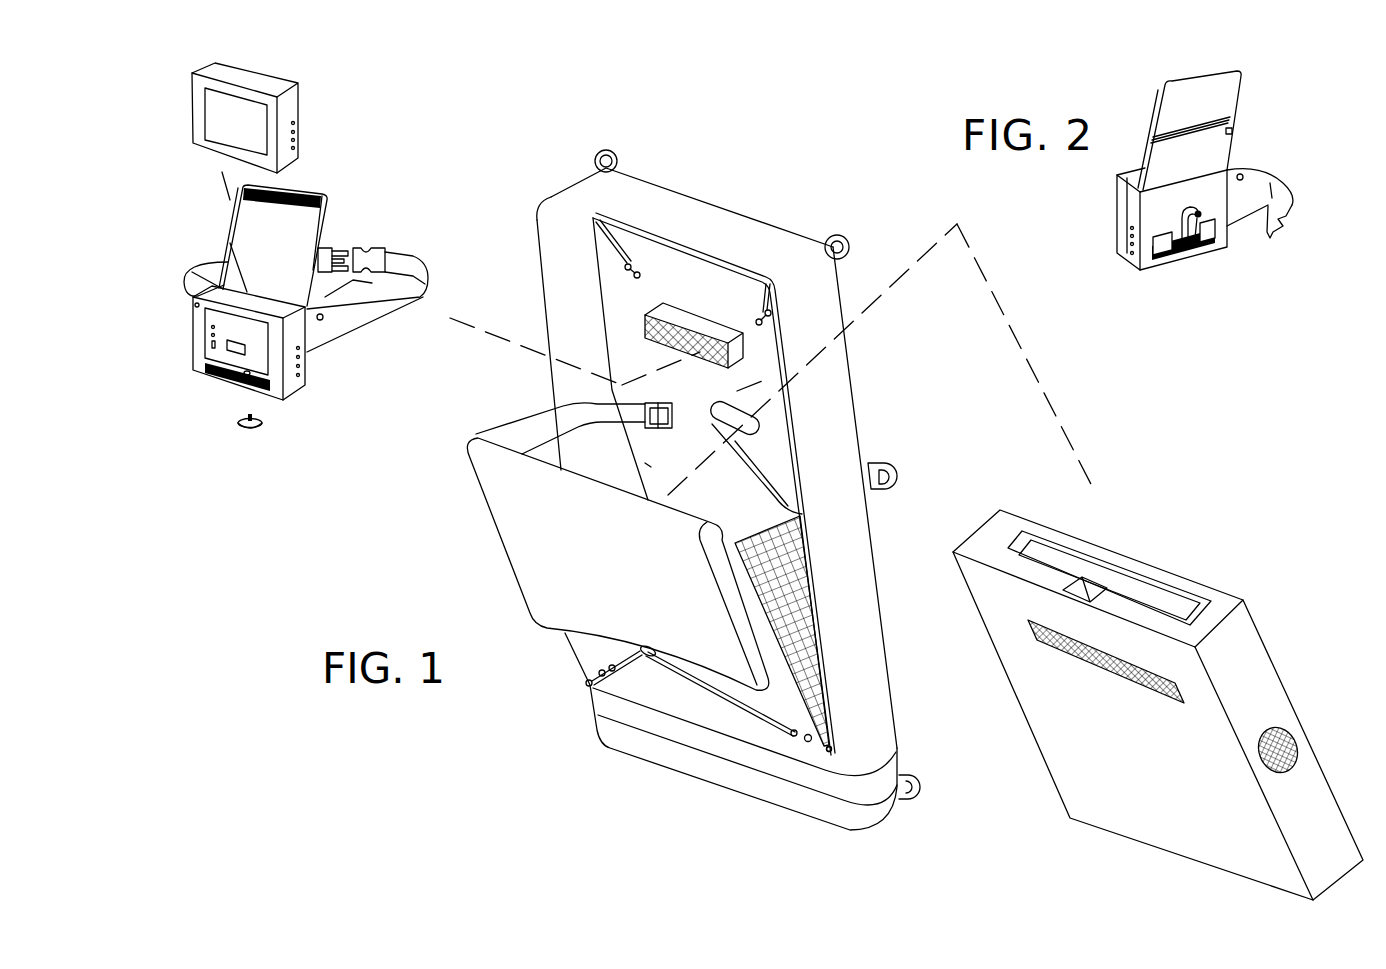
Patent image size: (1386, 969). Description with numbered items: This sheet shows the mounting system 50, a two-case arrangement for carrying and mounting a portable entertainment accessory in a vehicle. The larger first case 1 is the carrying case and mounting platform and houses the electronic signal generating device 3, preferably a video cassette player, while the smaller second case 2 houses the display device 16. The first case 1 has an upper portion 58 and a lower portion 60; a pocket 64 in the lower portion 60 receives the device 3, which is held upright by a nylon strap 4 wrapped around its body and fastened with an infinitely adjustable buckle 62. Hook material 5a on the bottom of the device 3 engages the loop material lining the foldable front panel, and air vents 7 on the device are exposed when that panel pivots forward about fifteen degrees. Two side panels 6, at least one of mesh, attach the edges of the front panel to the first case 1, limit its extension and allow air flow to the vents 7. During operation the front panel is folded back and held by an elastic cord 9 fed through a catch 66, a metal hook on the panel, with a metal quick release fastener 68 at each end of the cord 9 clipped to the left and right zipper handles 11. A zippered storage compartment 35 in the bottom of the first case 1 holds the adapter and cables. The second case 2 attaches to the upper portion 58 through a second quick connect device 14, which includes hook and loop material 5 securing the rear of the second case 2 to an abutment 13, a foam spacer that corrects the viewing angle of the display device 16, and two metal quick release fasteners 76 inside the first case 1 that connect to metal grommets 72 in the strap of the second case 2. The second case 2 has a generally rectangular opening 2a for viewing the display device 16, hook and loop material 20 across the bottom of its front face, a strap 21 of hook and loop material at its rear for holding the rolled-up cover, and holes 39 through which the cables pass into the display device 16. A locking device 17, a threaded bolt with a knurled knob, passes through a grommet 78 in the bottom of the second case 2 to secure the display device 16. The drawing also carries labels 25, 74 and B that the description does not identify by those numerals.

In FIG. 1, the first case 1 is at (718, 205).
In FIG. 1, the second case 2 is at (288, 397).
In FIG. 2, the second case 2 is at (1270, 110).
In FIG. 1, the opening 2a is at (203, 335).
In FIG. 1, the electronic signal generating device 3 is at (1158, 818).
In FIG. 1, the strap 4 is at (551, 404).
In FIG. 1, the hook and loop material 5 is at (692, 318).
In FIG. 2, the hook and loop material 5 is at (1210, 247).
In FIG. 1, the hook material 5a is at (1038, 638).
In FIG. 1, the side panels 6 is at (811, 573).
In FIG. 1, the air vents 7 is at (1293, 733).
In FIG. 1, the elastic cord 9 is at (712, 717).
In FIG. 1, the front panel zipper handles 11 is at (828, 752).
In FIG. 1, the abutment 13 is at (568, 326).
In FIG. 1, the second quick connect device 14 is at (632, 262).
In FIG. 1, the display device 16 is at (298, 117).
In FIG. 1, the locking device 17 is at (263, 427).
In FIG. 1, the hook and loop material 20 is at (218, 375).
In FIG. 2, the strap 21 is at (1193, 220).
In FIG. 1, the belt 25 is at (417, 260).
In FIG. 2, the belt 25 is at (1270, 240).
In FIG. 1, the storage compartment 35 is at (883, 800).
In FIG. 1, the holes 39 is at (300, 371).
In FIG. 2, the holes 39 is at (1132, 253).
In FIG. 1, the mounting system 50 is at (622, 118).
In FIG. 1, the upper portion 58 is at (601, 335).
In FIG. 1, the lower portion 60 is at (648, 465).
In FIG. 1, the buckle 62 is at (673, 408).
In FIG. 1, the pocket 64 is at (716, 490).
In FIG. 1, the catch 66 is at (640, 647).
In FIG. 1, the metal quick release fastener 68 is at (589, 686).
In FIG. 1, the grommets 72 is at (323, 320).
In FIG. 2, the grommets 72 is at (1283, 180).
In FIG. 1, the belt buckle 74 is at (358, 250).
In FIG. 1, the metal quick release fasteners 76 is at (637, 272).
In FIG. 1, the grommet 78 is at (235, 385).
In FIG. 1, the lid flap B is at (523, 530).